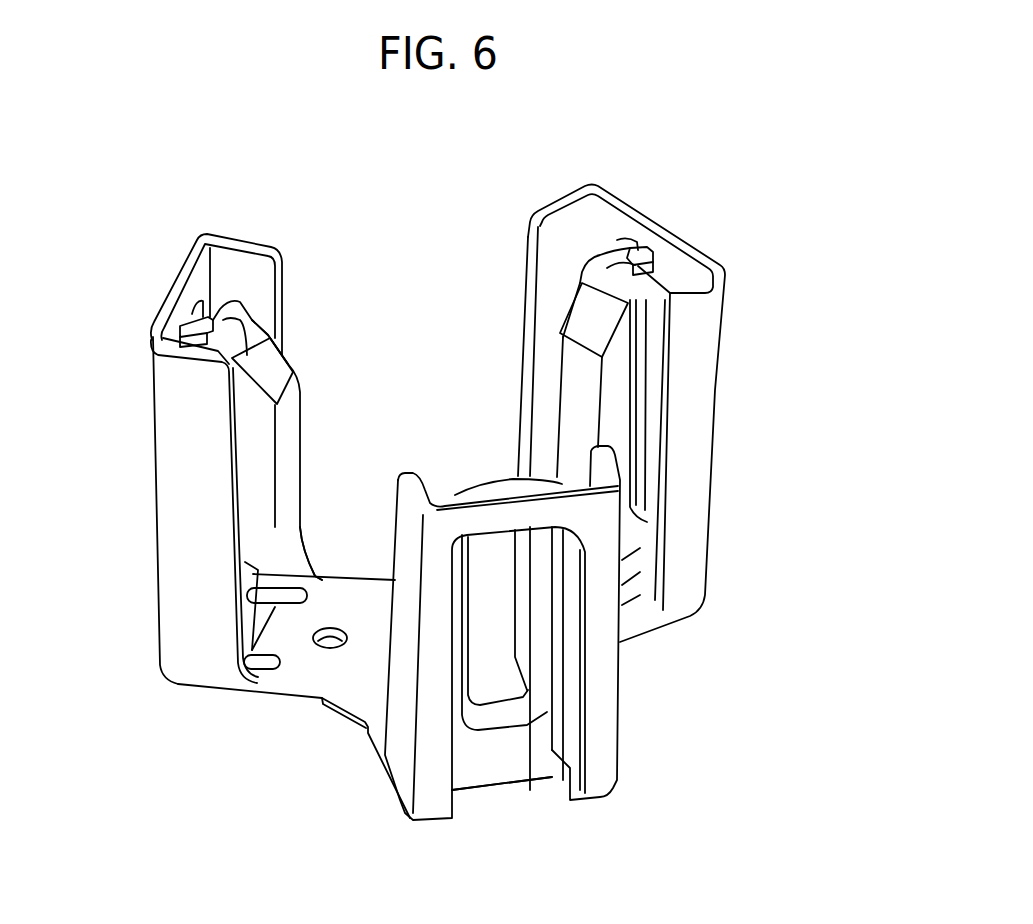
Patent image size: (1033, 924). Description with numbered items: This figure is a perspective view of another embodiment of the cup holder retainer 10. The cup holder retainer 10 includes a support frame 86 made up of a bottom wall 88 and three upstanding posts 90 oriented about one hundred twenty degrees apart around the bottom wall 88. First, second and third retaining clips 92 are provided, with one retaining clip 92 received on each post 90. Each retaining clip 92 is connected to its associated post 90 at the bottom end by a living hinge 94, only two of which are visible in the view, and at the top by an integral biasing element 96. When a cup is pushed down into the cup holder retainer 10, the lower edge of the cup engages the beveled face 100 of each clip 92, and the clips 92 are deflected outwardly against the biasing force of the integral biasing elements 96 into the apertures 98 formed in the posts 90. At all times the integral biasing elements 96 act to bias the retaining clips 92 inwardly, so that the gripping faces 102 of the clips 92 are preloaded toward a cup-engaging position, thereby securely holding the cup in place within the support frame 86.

The cup holder retainer 10 is at (674, 143).
The support frame 86 is at (228, 708).
The bottom wall 88 is at (352, 668).
The upstanding post 90 is at (168, 582).
The retaining clip 92 is at (293, 420).
The living hinge 94 is at (265, 605).
The integral biasing element 96 is at (190, 320).
The aperture 98 is at (183, 343).
The beveled face 100 is at (575, 320).
The gripping face 102 is at (284, 460).